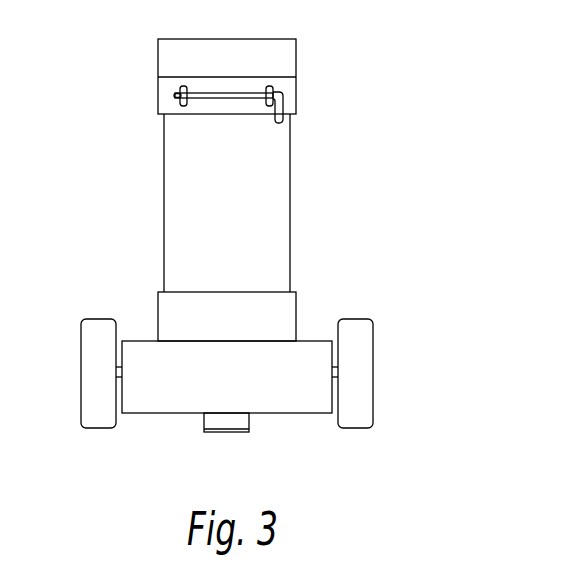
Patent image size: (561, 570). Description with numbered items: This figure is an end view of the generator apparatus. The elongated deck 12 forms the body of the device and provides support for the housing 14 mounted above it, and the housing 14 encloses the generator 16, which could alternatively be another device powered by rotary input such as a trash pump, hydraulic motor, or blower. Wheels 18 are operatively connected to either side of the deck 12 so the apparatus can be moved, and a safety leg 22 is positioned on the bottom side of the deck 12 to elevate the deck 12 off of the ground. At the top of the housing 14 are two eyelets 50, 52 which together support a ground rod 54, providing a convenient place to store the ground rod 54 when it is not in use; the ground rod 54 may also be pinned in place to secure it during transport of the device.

The deck 12 is at (300, 413).
The housing 14 is at (278, 39).
The generator 16 is at (281, 188).
The wheels 18 is at (92, 323).
The safety leg 22 is at (218, 432).
The eyelet 50 is at (181, 89).
The eyelet 52 is at (270, 89).
The ground rod 54 is at (278, 111).